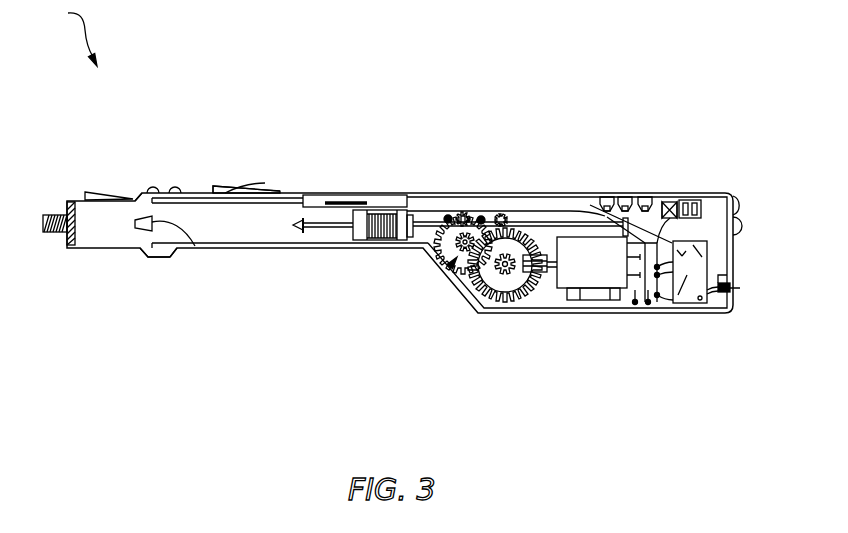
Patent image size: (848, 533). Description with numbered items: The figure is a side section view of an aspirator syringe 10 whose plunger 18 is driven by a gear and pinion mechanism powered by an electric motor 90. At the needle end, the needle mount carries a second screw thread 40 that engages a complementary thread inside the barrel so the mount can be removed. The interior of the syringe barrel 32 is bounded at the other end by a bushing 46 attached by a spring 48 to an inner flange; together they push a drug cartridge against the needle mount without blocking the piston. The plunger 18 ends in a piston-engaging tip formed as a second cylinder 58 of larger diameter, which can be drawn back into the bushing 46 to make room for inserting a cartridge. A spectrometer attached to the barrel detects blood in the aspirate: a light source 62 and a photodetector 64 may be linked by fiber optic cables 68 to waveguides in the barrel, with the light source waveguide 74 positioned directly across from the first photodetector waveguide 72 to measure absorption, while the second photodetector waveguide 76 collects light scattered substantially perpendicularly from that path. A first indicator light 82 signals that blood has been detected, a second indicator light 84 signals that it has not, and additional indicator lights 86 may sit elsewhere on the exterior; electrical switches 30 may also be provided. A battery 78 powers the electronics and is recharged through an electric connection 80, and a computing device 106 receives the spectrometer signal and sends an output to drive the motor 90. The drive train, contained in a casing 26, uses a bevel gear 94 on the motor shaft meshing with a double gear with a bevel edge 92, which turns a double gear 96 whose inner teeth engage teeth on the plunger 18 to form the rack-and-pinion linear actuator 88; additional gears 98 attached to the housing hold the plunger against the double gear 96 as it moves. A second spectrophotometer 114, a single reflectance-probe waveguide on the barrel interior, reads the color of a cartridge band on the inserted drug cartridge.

The aspirator syringe 10 is at (70, 35).
The plunger 18 is at (533, 226).
The casing 26 is at (468, 258).
The electrical switches 30 is at (100, 195).
The interior of the syringe barrel 32 is at (233, 226).
The second screw thread 40 is at (64, 213).
The bushing 46 is at (360, 237).
The spring 48 is at (385, 238).
The second cylinder 58 is at (303, 226).
The light source 62 is at (688, 295).
The photodetector 64 is at (645, 197).
The fiber optic cables 68 is at (345, 198).
The first photodetector waveguide 72 is at (143, 250).
The light source waveguide 74 is at (135, 195).
The second photodetector waveguide 76 is at (136, 227).
The battery 78 is at (635, 302).
The electric connection 80 is at (730, 288).
The first indicator light 82 is at (153, 188).
The second indicator light 84 is at (213, 186).
The additional indicator lights 86 is at (737, 232).
The linear actuator 88 is at (450, 267).
The electric motor 90 is at (592, 282).
The double gear with a bevel edge 92 is at (548, 272).
The bevel gear 94 is at (593, 300).
The double gear 96 is at (505, 282).
The additional gears 98 is at (481, 216).
The computing device 106 is at (673, 207).
The second spectrophotometer 114 is at (320, 198).